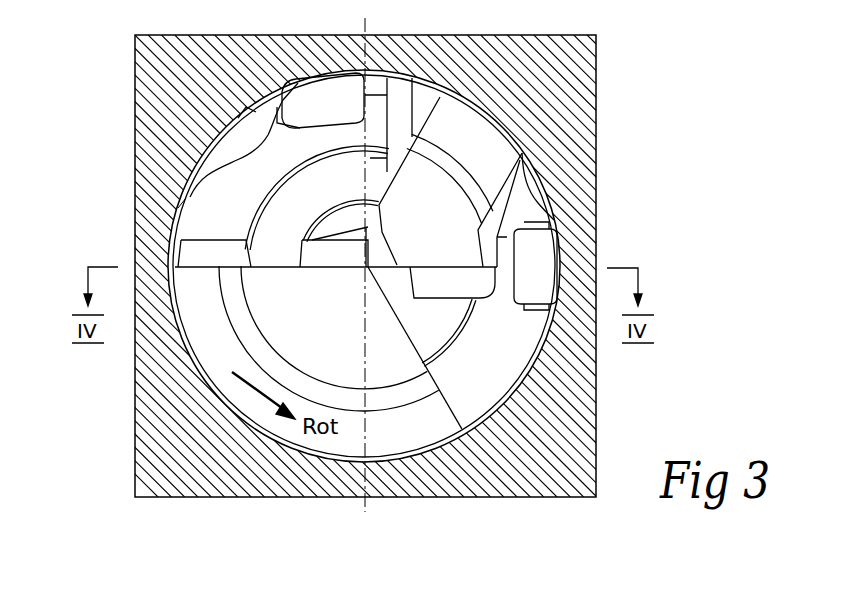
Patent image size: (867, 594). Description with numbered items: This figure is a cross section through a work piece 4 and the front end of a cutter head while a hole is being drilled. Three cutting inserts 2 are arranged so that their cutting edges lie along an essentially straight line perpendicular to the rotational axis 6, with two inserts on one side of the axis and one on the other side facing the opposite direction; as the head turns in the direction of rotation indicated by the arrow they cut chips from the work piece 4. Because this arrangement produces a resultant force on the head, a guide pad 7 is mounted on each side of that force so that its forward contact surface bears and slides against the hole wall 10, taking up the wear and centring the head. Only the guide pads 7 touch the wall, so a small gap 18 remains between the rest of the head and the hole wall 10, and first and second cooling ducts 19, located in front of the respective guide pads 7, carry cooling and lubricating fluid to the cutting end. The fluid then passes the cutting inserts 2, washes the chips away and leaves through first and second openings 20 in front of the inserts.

The cutting inserts 2 is at (197, 268).
The work piece 4 is at (575, 70).
The rotational axis 6 is at (356, 274).
The guide pad 7 is at (305, 115).
The hole wall 10 is at (250, 116).
The gap 18 is at (183, 203).
The cooling ducts 19 is at (242, 158).
The openings 20 is at (436, 216).